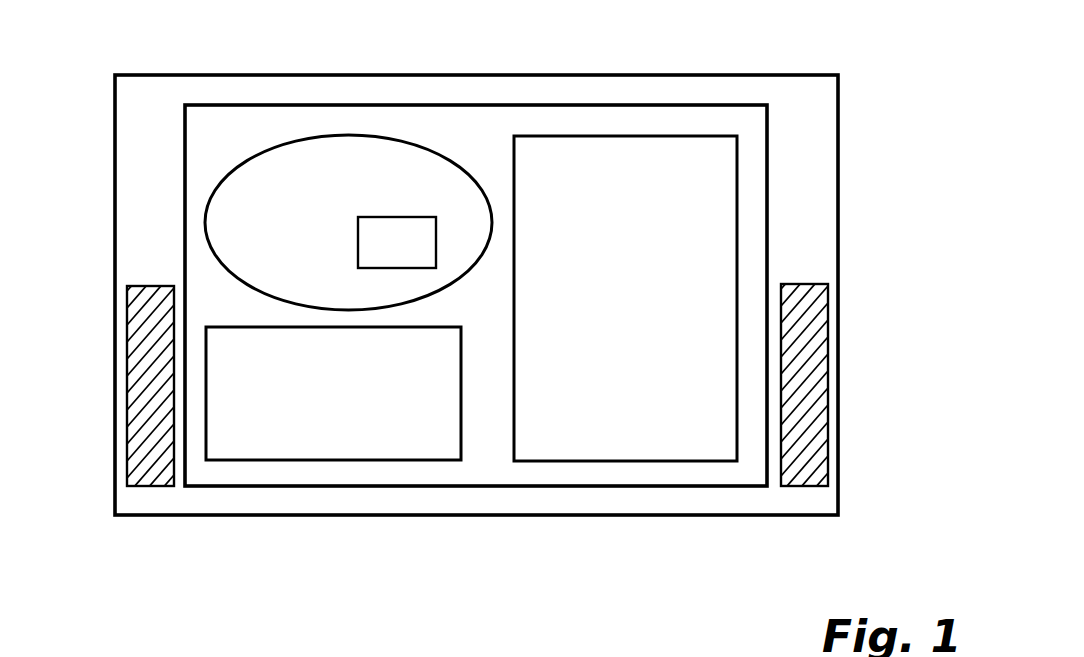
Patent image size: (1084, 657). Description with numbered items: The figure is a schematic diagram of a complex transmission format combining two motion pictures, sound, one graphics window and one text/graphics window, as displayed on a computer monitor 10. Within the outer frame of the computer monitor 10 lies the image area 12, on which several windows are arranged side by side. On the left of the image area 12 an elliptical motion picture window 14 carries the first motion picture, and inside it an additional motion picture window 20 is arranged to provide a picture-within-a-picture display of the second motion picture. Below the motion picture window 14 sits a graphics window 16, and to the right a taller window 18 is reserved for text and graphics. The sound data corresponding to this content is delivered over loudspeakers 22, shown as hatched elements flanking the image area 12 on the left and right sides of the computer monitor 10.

The computer monitor 10 is at (757, 60).
The image area 12 is at (493, 140).
The motion picture window 14 is at (389, 176).
The graphics window 16 is at (441, 371).
The window for text and graphics 18 is at (709, 181).
The additional motion picture window 20 is at (411, 255).
The loudspeakers 22 is at (825, 300).